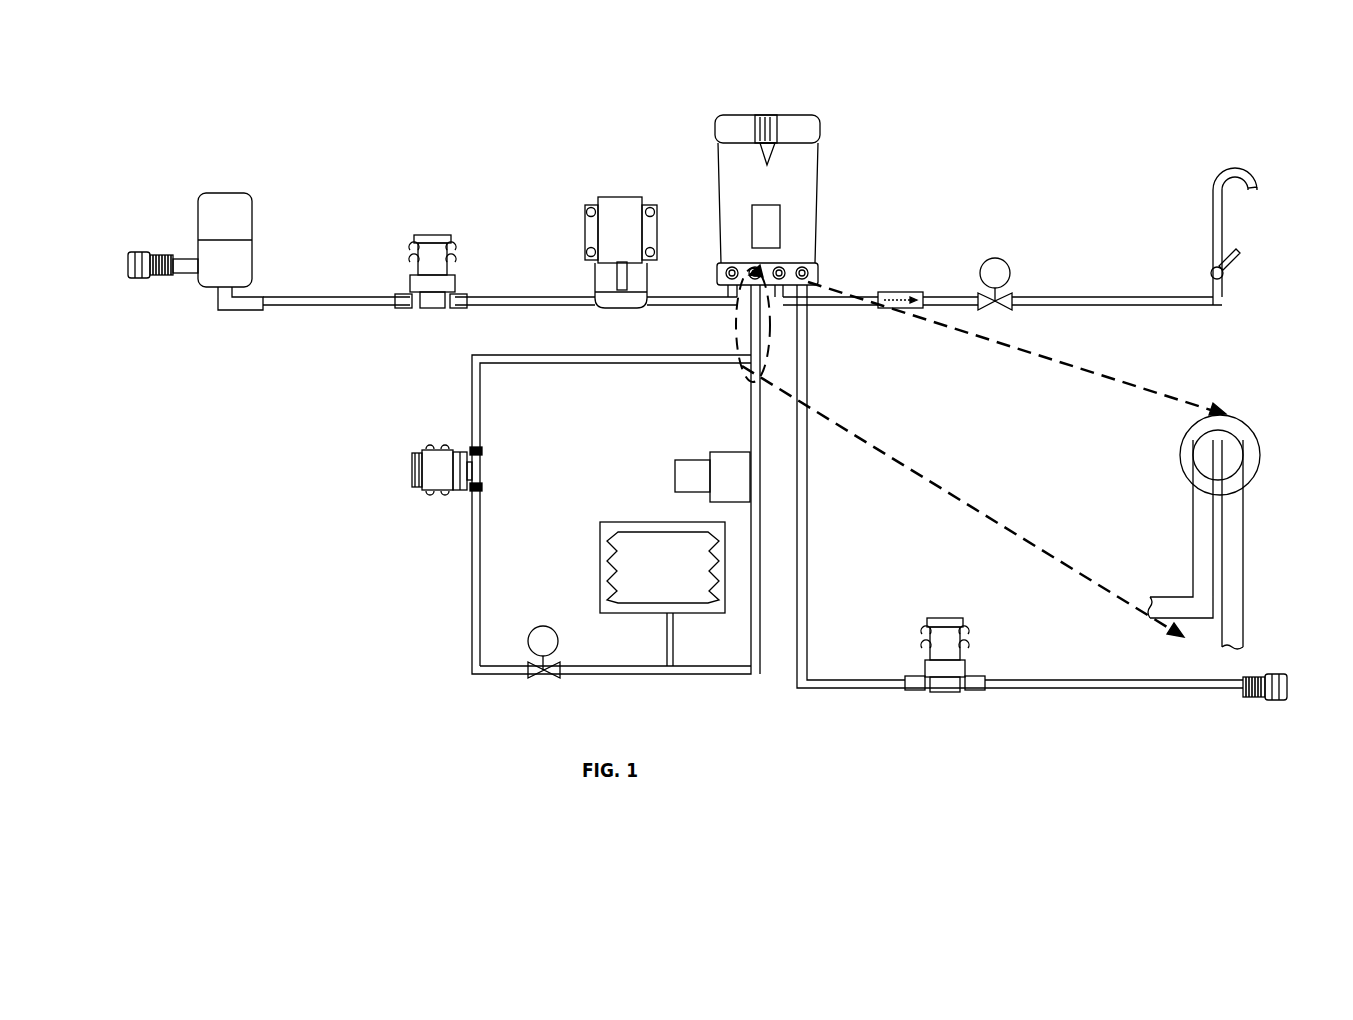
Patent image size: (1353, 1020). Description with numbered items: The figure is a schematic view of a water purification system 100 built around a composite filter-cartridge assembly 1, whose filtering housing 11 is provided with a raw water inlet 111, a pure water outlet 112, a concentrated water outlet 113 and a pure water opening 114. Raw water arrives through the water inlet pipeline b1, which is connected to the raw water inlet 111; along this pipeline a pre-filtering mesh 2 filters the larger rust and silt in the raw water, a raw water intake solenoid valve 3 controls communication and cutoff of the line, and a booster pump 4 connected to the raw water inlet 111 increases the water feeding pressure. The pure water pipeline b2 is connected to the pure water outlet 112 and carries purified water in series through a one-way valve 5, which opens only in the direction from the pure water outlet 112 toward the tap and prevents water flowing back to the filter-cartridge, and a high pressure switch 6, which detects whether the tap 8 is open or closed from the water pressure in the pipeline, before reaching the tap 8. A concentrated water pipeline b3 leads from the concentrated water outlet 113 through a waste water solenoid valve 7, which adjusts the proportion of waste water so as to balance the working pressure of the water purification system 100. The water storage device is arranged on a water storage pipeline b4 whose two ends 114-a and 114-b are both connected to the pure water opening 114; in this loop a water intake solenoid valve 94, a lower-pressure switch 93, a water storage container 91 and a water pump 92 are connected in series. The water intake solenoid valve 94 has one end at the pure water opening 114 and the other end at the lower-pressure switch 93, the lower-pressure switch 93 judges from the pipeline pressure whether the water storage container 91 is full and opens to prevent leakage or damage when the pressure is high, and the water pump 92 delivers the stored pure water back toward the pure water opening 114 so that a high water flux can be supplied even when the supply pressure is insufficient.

The water purification system 100 is at (156, 143).
The composite filter-cartridge assembly 1 is at (767, 246).
The filtering housing 11 is at (807, 190).
The raw water inlet 111 is at (725, 263).
The pure water outlet 112 is at (785, 268).
The concentrated water outlet 113 is at (808, 271).
The pure water opening 114 is at (755, 280).
The end of the water storage pipeline 114-a is at (1202, 455).
The end of the water storage pipeline 114-b is at (1238, 452).
The pre-filtering mesh 2 is at (238, 215).
The raw water intake solenoid valve 3 is at (428, 262).
The booster pump 4 is at (618, 210).
The one-way valve 5 is at (902, 308).
The high pressure switch 6 is at (1003, 307).
The waste water solenoid valve 7 is at (948, 638).
The tap 8 is at (1215, 182).
The water storage container 91 is at (718, 570).
The water pump 92 is at (730, 470).
The lower-pressure switch 93 is at (530, 637).
The water intake solenoid valve 94 is at (428, 477).
The water inlet pipeline b1 is at (317, 307).
The pure water pipeline b2 is at (1108, 305).
The concentrated water pipeline b3 is at (1087, 682).
The water storage pipeline b4 is at (470, 378).